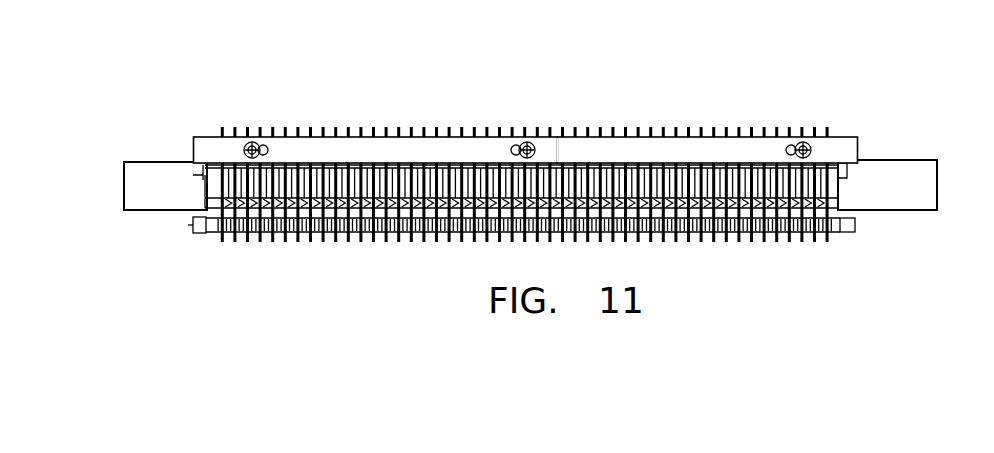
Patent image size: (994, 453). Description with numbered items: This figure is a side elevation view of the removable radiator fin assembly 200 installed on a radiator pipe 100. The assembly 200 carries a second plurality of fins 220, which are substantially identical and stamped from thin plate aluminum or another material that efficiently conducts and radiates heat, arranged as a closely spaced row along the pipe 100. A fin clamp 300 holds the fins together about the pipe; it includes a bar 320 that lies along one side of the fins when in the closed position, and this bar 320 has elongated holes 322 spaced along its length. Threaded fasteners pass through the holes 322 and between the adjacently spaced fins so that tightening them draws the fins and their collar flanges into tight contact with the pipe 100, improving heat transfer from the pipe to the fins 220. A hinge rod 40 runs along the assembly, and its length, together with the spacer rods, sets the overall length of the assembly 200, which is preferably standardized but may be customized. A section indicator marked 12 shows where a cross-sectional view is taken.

The radiator pipe 100 is at (892, 170).
The removable radiator fin assembly 200 is at (636, 80).
The second plurality of fins 220 is at (397, 135).
The fin clamp 300 is at (475, 92).
The second bar 320 is at (208, 147).
The elongated holes 322 is at (266, 146).
The hinge rod 40 is at (846, 224).
The section line 12- 12 is at (792, 295).